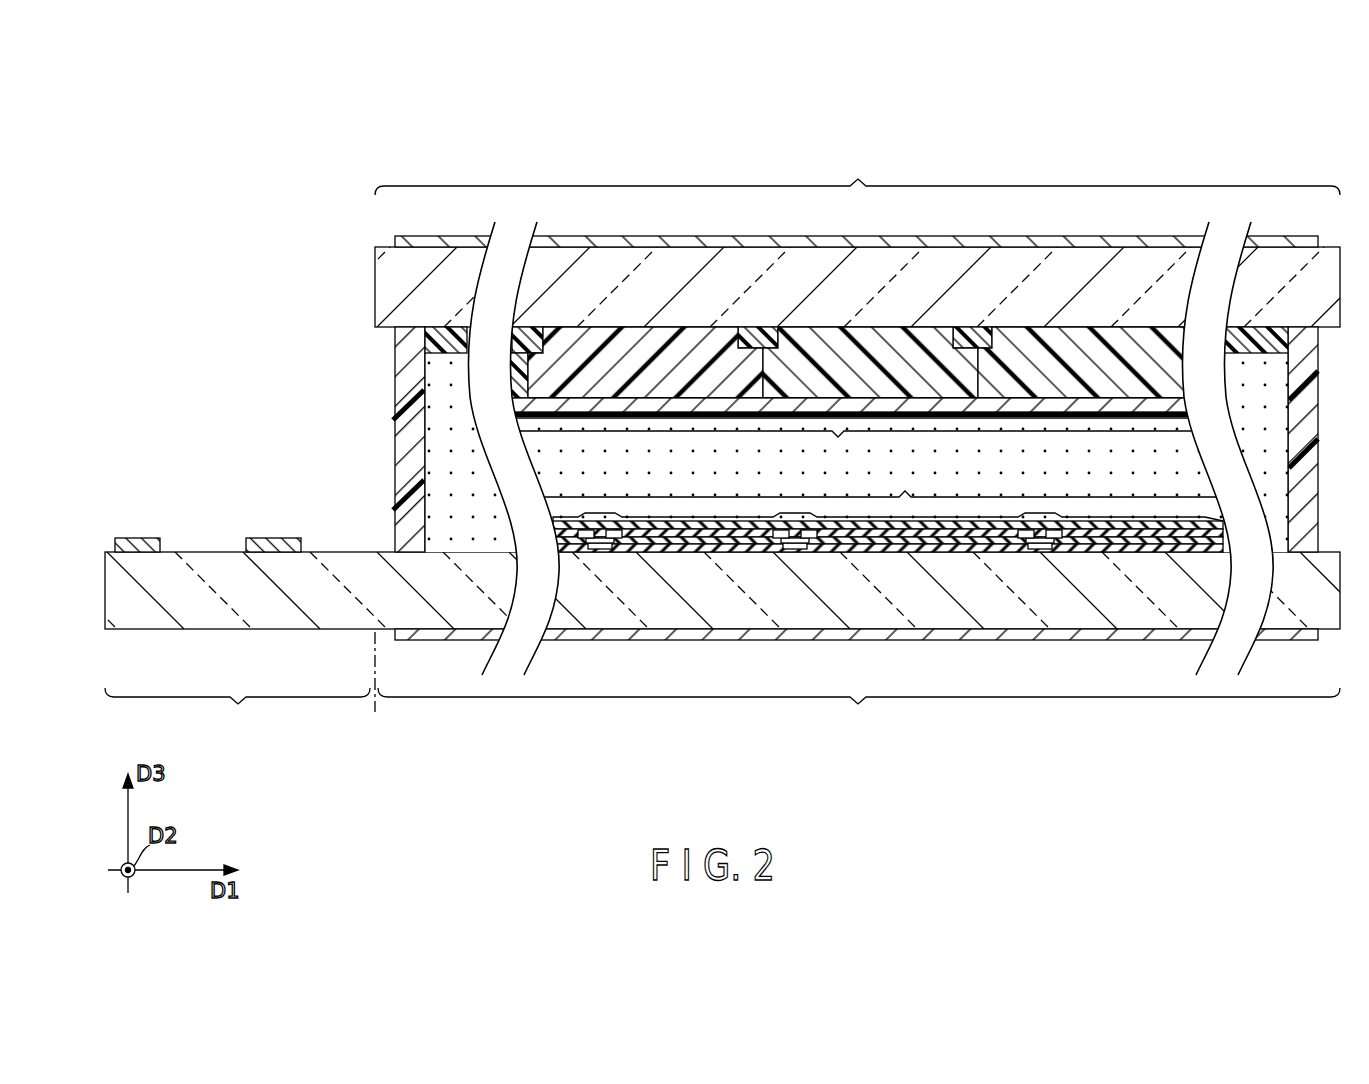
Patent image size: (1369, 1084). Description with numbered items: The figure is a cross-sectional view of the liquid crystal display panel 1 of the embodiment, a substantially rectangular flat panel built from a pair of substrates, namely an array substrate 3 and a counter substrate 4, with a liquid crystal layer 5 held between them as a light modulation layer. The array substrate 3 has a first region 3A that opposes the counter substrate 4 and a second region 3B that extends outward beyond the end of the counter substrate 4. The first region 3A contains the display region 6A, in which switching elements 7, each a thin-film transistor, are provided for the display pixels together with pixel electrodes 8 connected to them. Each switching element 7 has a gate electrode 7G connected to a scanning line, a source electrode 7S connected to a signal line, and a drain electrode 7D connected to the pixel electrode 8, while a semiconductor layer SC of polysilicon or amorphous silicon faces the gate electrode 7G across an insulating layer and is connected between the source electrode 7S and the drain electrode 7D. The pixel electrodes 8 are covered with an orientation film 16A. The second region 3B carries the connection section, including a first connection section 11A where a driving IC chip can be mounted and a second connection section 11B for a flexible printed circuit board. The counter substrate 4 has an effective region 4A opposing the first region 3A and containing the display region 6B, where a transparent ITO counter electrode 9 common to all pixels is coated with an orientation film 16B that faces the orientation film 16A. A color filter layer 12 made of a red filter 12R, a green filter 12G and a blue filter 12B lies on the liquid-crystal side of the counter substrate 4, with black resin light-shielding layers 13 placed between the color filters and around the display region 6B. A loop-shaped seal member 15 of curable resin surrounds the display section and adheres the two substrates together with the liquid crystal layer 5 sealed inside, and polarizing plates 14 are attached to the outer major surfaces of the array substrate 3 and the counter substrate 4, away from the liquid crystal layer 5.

The liquid crystal display panel 1 is at (1188, 158).
The array substrate 3 is at (1322, 630).
The first region 3A is at (857, 683).
The second region 3B is at (237, 710).
The counter substrate 4 is at (1320, 255).
The effective region 4A is at (857, 172).
The liquid crystal layer 5 is at (1272, 540).
The display region 6A is at (875, 501).
The display region 6B is at (866, 485).
The switching element 7 is at (818, 568).
The source electrode 7S is at (585, 533).
The drain electrode 7D is at (604, 530).
The gate electrode 7G is at (606, 551).
The semiconductor layer SC is at (595, 549).
The pixel electrode 8 is at (693, 548).
The counter electrode 9 is at (902, 417).
The first connection section 11A is at (283, 537).
The second connection section 11B is at (143, 537).
The color filter layer 12 is at (764, 300).
The red filter 12R is at (632, 342).
The green filter 12G is at (830, 350).
The blue filter 12B is at (1060, 348).
The light-shielding layer 13 is at (433, 340).
The polarizing plate 14 is at (857, 238).
The seal member 15 is at (402, 420).
The orientation film 16A is at (1200, 518).
The orientation film 16B is at (1003, 410).